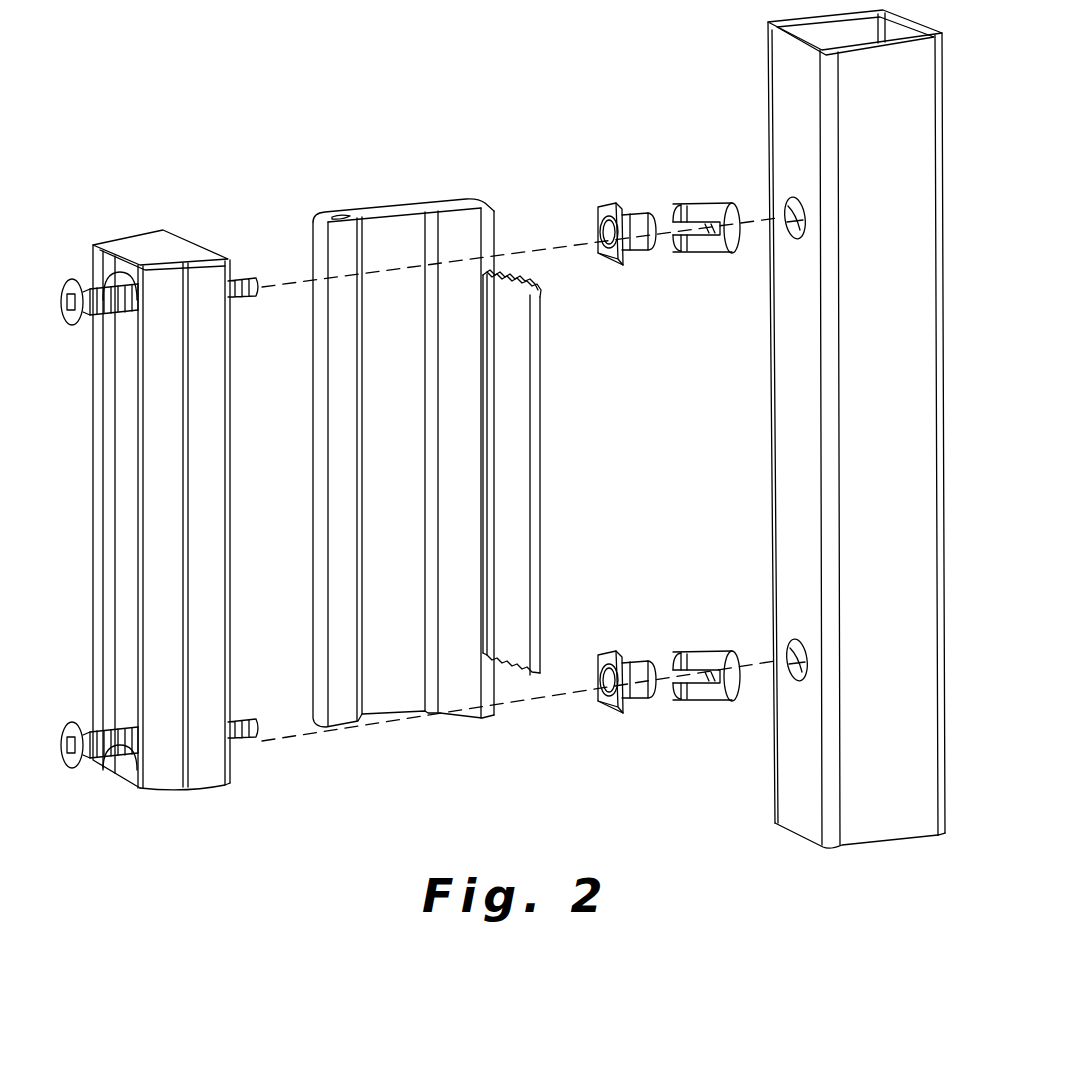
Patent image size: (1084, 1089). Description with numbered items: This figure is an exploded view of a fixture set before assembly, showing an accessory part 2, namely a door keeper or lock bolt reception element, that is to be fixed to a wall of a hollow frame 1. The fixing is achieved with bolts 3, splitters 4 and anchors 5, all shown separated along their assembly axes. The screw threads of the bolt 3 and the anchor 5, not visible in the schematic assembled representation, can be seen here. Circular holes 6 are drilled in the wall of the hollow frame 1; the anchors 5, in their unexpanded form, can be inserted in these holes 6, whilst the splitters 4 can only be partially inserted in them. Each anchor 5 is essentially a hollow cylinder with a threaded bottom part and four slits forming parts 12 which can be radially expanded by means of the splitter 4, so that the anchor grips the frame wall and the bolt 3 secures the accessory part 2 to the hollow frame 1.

The hollow frame 1 is at (748, 140).
The accessory part 2 is at (306, 211).
The bolt 3 is at (110, 292).
The splitter 4 is at (633, 220).
The anchor 5 is at (698, 216).
The circular holes 6 is at (793, 198).
The expandable parts 12 is at (703, 247).